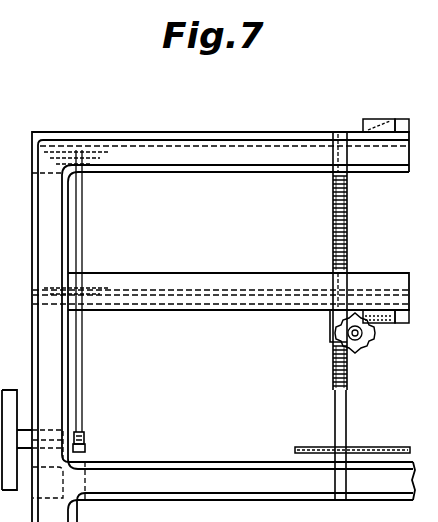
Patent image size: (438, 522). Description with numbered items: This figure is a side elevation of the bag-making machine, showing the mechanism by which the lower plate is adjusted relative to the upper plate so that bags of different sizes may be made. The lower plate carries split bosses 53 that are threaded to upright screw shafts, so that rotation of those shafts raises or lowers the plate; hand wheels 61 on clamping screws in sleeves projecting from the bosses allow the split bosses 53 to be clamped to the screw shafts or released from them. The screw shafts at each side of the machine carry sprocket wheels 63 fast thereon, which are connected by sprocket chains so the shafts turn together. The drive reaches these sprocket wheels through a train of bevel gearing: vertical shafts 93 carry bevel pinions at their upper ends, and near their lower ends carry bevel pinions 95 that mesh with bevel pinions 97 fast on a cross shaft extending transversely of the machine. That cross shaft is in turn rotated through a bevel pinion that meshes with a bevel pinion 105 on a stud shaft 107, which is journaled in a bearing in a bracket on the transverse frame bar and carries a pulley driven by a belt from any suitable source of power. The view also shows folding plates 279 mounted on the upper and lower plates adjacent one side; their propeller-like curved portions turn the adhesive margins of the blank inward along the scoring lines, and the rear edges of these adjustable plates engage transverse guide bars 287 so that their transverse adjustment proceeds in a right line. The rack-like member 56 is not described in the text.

The split bosses 53 is at (330, 340).
The rack 56 is at (348, 393).
The hand wheels 61 is at (362, 352).
The sprocket wheels 63 is at (320, 445).
The vertical shafts 93 is at (82, 238).
The bevel pinions 95 is at (85, 452).
The bevel pinions 97 is at (84, 437).
The bevel pinion 105 is at (80, 430).
The stud shaft 107 is at (50, 424).
The folding plates 279 is at (400, 119).
The transverse guide bars 287 is at (363, 123).